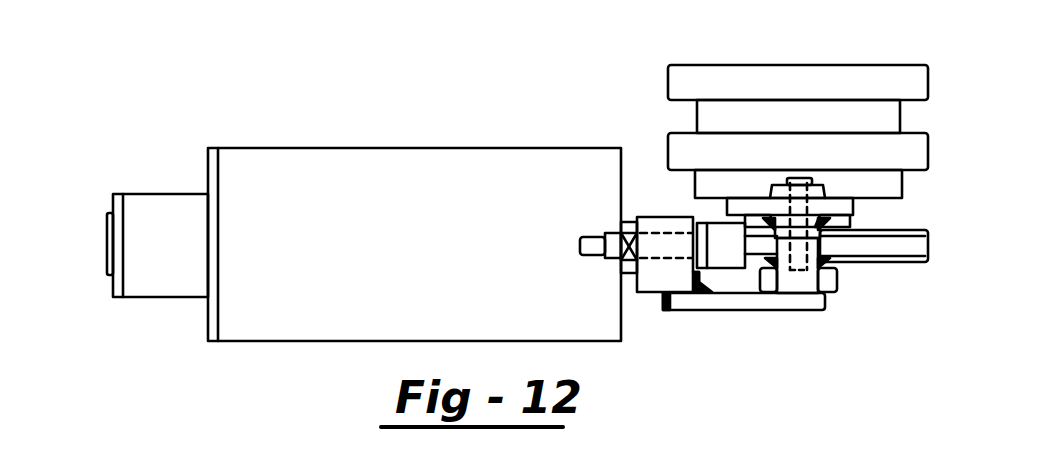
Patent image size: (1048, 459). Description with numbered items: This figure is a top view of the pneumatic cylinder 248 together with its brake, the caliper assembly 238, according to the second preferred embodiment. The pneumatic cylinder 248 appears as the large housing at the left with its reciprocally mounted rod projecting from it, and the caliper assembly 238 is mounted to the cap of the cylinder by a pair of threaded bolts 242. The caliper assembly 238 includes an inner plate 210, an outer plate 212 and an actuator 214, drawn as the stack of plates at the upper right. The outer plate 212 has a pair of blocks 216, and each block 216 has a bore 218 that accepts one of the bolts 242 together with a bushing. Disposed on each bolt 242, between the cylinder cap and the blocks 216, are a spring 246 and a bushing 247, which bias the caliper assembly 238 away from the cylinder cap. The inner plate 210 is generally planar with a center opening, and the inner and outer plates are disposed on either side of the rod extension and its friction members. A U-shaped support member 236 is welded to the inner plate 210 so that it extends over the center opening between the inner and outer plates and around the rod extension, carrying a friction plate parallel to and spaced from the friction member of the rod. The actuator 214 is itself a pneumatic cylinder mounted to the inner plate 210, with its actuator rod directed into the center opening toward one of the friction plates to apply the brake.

The inner plate 210 is at (850, 211).
The outer plate 212 is at (752, 298).
The actuator 214 is at (910, 155).
The blocks 216 is at (648, 278).
The bore 218 is at (653, 222).
The U-shaped support member 236 is at (835, 278).
The caliper assembly 238 is at (852, 294).
The threaded bolts 242 is at (600, 253).
The spring 246 is at (617, 258).
The bushing 247 is at (617, 232).
The pneumatic cylinder 248 is at (247, 341).